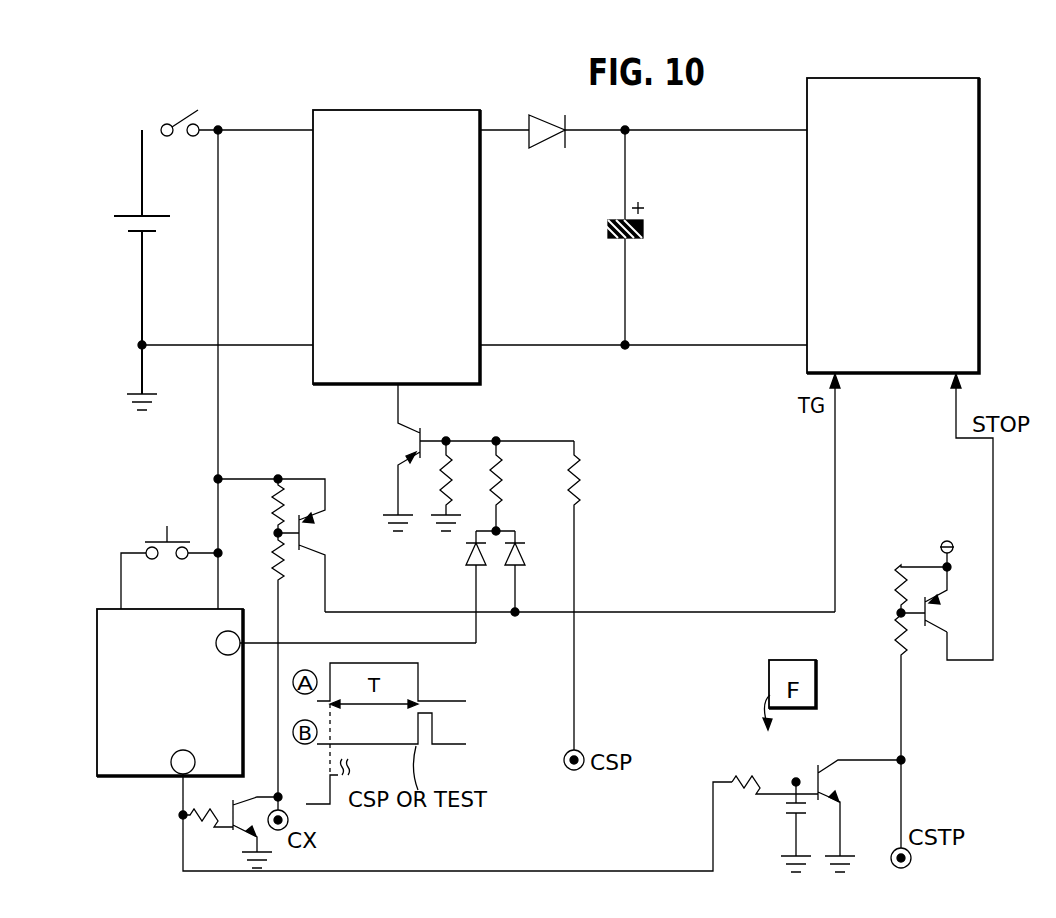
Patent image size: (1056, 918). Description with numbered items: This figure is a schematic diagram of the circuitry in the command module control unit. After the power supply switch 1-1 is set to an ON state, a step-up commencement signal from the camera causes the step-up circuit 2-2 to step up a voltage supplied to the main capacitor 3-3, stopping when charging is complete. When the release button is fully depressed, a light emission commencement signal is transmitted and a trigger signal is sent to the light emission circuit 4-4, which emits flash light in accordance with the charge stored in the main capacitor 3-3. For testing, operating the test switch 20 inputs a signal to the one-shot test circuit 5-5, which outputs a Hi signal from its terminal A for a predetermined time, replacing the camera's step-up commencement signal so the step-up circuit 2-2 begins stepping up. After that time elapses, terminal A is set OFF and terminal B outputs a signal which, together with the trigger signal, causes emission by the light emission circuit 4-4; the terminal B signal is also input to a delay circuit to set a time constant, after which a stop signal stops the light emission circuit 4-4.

The power supply switch 1-1 is at (162, 125).
The step-up circuit 2-2 is at (397, 110).
The main capacitor 3-3 is at (641, 240).
The light emission circuit 4-4 is at (900, 78).
The one-shot test circuit 5-5 is at (123, 777).
The test switch 20 is at (161, 538).